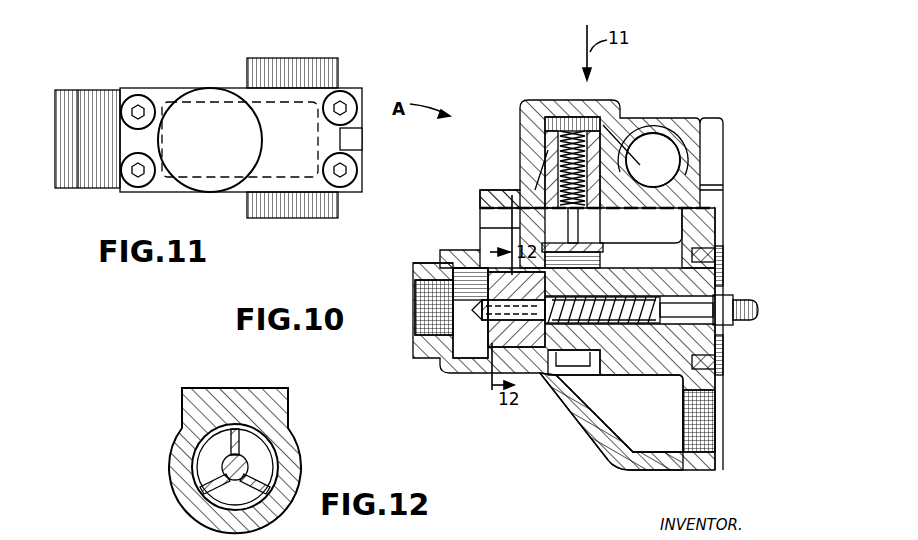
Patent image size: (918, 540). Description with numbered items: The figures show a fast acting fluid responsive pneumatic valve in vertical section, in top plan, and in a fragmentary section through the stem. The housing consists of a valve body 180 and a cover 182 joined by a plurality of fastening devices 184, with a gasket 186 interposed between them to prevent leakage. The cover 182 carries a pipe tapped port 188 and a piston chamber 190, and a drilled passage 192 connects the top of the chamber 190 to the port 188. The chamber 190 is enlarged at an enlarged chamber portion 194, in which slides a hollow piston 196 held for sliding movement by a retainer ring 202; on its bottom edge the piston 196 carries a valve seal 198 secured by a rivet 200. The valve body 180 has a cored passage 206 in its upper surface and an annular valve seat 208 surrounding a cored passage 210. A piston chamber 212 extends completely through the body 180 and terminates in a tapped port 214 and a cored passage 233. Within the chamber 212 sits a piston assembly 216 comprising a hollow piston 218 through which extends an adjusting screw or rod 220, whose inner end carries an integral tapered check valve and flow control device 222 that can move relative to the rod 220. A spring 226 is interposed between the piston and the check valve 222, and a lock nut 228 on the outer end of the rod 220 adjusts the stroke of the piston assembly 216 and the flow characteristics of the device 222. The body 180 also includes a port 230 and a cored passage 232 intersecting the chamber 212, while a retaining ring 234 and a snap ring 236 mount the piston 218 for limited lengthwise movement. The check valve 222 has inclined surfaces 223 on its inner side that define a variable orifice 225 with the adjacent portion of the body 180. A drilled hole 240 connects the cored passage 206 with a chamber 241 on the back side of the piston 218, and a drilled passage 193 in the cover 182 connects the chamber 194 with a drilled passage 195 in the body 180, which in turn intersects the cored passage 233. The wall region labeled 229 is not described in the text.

In FIG. 11, the valve body 180 is at (100, 192).
In FIG. 12, the valve body 180 is at (170, 456).
In FIG. 10, the valve body 180 is at (440, 362).
In FIG. 11, the cover 182 is at (178, 92).
In FIG. 10, the cover 182 is at (625, 118).
In FIG. 11, the fastening devices 184 is at (128, 98).
In FIG. 10, the gasket 186 is at (723, 207).
In FIG. 10, the pipe tapped port 188 is at (700, 128).
In FIG. 10, the piston chamber 190 is at (560, 117).
In FIG. 10, the drilled passage 192 is at (605, 120).
In FIG. 10, the drilled passage 193 is at (540, 186).
In FIG. 10, the enlarged chamber portion 194 is at (548, 152).
In FIG. 10, the drilled passage 195 is at (480, 213).
In FIG. 10, the piston 196 is at (545, 167).
In FIG. 10, the valve seal 198 is at (600, 232).
In FIG. 10, the rivet 200 is at (590, 262).
In FIG. 10, the retainer ring 202 is at (480, 193).
In FIG. 10, the cored passage 206 is at (723, 218).
In FIG. 10, the annular valve seat 208 is at (480, 228).
In FIG. 10, the cored passage 210 is at (470, 250).
In FIG. 10, the piston chamber 212 is at (642, 353).
In FIG. 10, the tapped port 214 is at (432, 332).
In FIG. 10, the piston assembly 216 is at (723, 340).
In FIG. 10, the hollow piston 218 is at (723, 282).
In FIG. 10, the adjusting screw or rod 220 is at (735, 322).
In FIG. 12, the check valve and flow control device 222 is at (252, 440).
In FIG. 10, the check valve and flow control device 222 is at (452, 282).
In FIG. 10, the inclined surfaces 223 is at (492, 368).
In FIG. 10, the variable orifice 225 is at (448, 264).
In FIG. 10, the spring 226 is at (565, 356).
In FIG. 10, the lock nut 228 is at (757, 300).
In FIG. 10, the wall 229 is at (548, 393).
In FIG. 10, the port 230 is at (723, 443).
In FIG. 10, the cored passage 232 is at (606, 440).
In FIG. 10, the cored passage 233 is at (455, 310).
In FIG. 10, the retaining ring 234 is at (723, 262).
In FIG. 10, the snap ring 236 is at (723, 246).
In FIG. 10, the drilled hole 240 is at (641, 225).
In FIG. 10, the chamber 241 is at (715, 372).